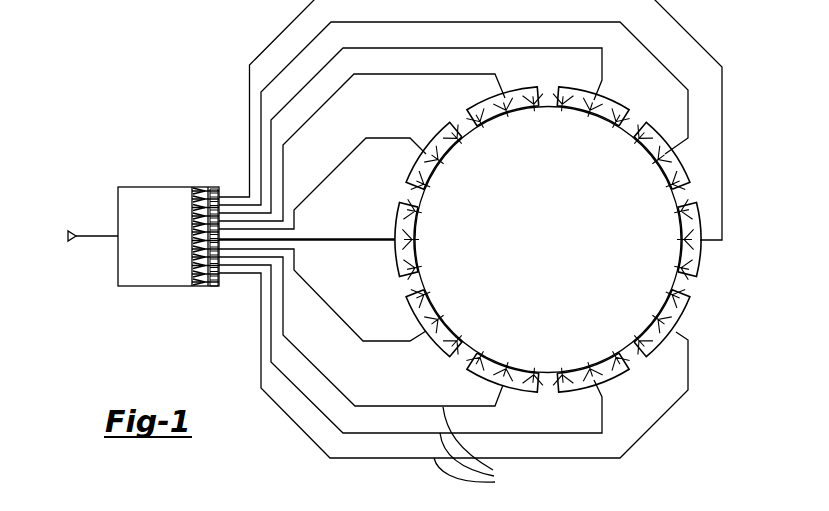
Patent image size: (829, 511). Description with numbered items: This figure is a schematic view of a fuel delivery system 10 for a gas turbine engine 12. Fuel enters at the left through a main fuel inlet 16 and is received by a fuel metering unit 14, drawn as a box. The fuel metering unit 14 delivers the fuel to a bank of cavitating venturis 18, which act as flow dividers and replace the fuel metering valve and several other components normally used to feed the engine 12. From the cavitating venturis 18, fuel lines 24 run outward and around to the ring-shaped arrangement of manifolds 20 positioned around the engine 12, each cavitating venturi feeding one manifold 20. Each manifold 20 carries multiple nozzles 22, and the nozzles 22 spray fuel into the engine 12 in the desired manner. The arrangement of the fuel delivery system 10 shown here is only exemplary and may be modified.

The fuel delivery system 10 is at (197, 83).
The gas turbine engine 12 is at (559, 254).
The fuel metering unit 14 is at (145, 187).
The main fuel inlet 16 is at (118, 237).
The cavitating venturis 18 is at (208, 289).
The manifold 20 is at (700, 256).
The nozzles 22 is at (672, 294).
The fuel lines 24 is at (479, 451).